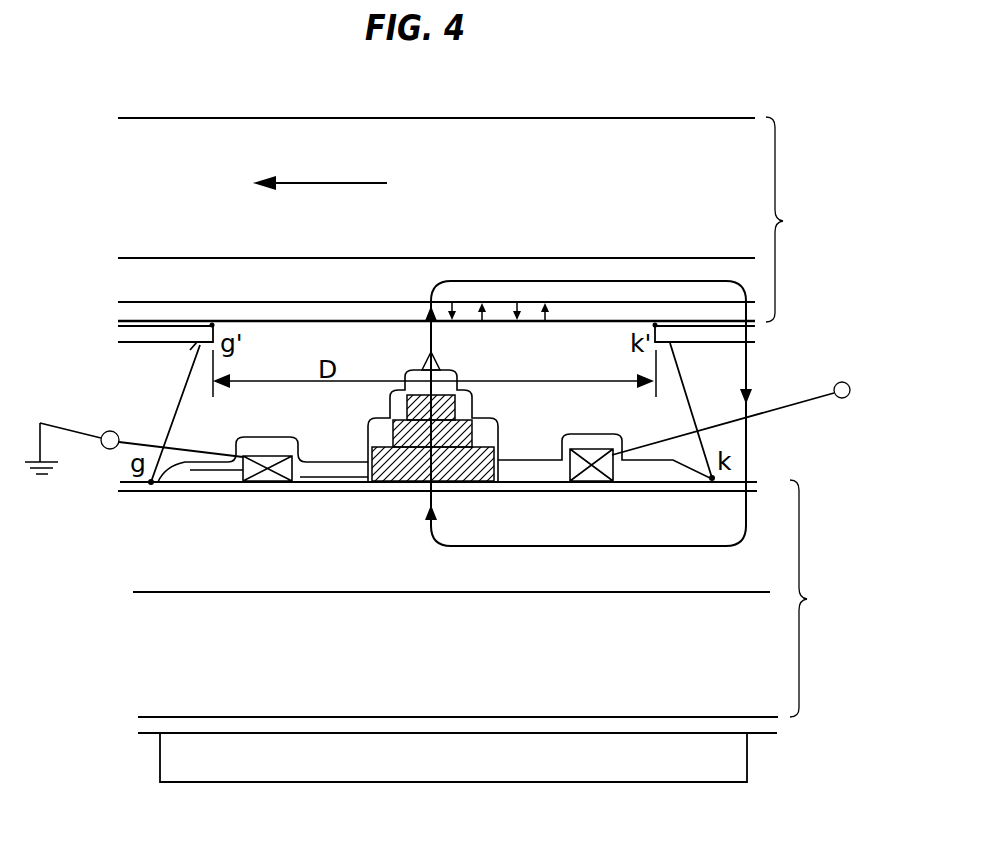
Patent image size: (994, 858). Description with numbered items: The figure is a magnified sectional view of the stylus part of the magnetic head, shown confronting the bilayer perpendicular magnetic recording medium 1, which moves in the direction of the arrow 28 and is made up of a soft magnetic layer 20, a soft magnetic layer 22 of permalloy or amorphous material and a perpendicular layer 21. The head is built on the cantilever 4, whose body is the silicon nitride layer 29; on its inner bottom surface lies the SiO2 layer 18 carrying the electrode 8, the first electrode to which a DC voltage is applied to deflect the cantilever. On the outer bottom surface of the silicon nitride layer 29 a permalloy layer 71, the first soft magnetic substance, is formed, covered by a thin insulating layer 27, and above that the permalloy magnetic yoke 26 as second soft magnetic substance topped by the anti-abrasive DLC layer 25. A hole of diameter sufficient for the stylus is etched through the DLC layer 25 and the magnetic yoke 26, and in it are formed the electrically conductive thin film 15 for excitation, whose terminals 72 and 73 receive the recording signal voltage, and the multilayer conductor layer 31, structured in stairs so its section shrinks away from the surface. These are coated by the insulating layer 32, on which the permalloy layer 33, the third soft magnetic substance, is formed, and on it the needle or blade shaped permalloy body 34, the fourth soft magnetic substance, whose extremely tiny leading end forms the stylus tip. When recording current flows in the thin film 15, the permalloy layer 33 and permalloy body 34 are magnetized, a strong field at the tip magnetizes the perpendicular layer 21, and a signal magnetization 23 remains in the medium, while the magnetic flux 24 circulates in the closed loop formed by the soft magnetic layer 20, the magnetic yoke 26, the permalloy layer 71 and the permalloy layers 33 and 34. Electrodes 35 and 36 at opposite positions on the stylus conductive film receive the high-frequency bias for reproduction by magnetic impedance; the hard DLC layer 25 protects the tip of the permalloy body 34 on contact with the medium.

The bilayer perpendicular magnetic recording medium 1 is at (803, 219).
The cantilever 4 is at (824, 598).
The electrode 8 is at (733, 770).
The electrically conductive thin film 15 is at (273, 481).
The SiO2 layer 18 is at (753, 733).
The soft magnetic layer 20 is at (252, 270).
The perpendicular layer 21 is at (240, 306).
The soft magnetic layer 22 is at (482, 118).
The signal magnetization 23 is at (485, 318).
The magnetic flux 24 is at (543, 281).
The DLC layer 25 is at (728, 330).
The magnetic yoke 26 is at (729, 354).
The insulating layer 27 is at (735, 478).
The arrow 28 is at (320, 172).
The silicon nitride layer 29 is at (150, 672).
The multilayer conductor layer 31 is at (420, 479).
The insulating layer 32 is at (370, 479).
The permalloy layer 33 is at (340, 473).
The permalloy body 34 is at (435, 354).
The electrode 35 is at (458, 466).
The electrode 36 is at (505, 408).
The permalloy layer 71 is at (150, 556).
The terminal 72 is at (750, 418).
The terminal 73 is at (134, 436).